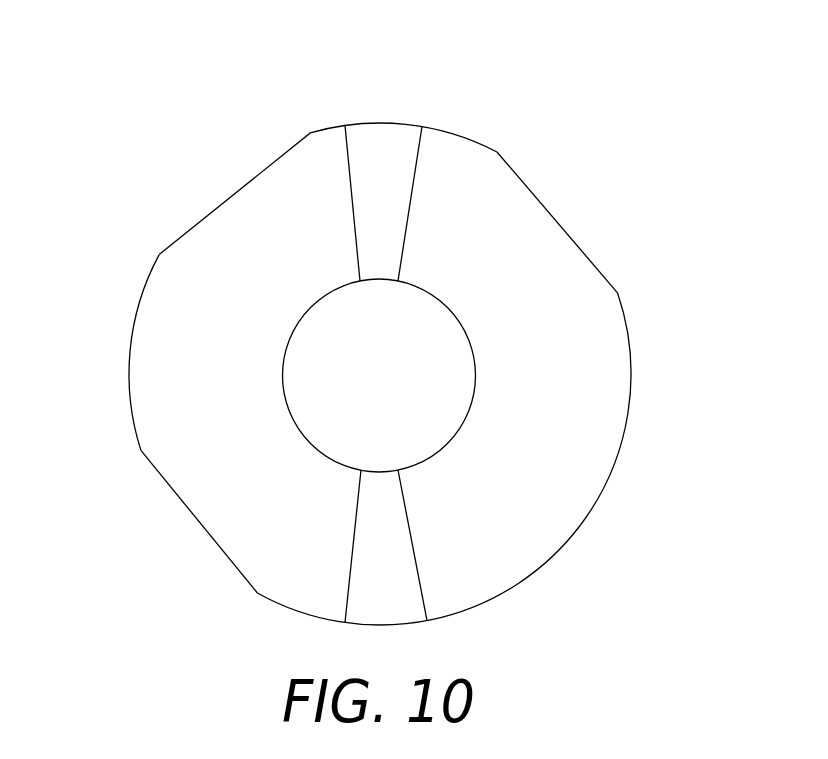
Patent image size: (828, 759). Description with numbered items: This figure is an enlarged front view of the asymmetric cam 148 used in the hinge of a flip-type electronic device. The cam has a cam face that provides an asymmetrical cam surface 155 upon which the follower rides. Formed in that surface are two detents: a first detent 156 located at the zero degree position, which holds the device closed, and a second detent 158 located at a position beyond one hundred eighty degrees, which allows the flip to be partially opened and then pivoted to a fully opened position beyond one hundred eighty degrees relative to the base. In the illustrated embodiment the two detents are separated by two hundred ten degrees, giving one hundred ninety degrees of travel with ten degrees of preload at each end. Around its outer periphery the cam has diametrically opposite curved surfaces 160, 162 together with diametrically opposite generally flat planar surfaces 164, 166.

The asymmetric cam 148 is at (305, 101).
The asymmetrical cam surface 155 is at (532, 557).
The first detent 156 is at (422, 127).
The second detent 158 is at (412, 547).
The curved surface 160 is at (130, 355).
The curved surface 162 is at (605, 475).
The flat planar surface 164 is at (200, 523).
The flat planar surface 166 is at (522, 193).